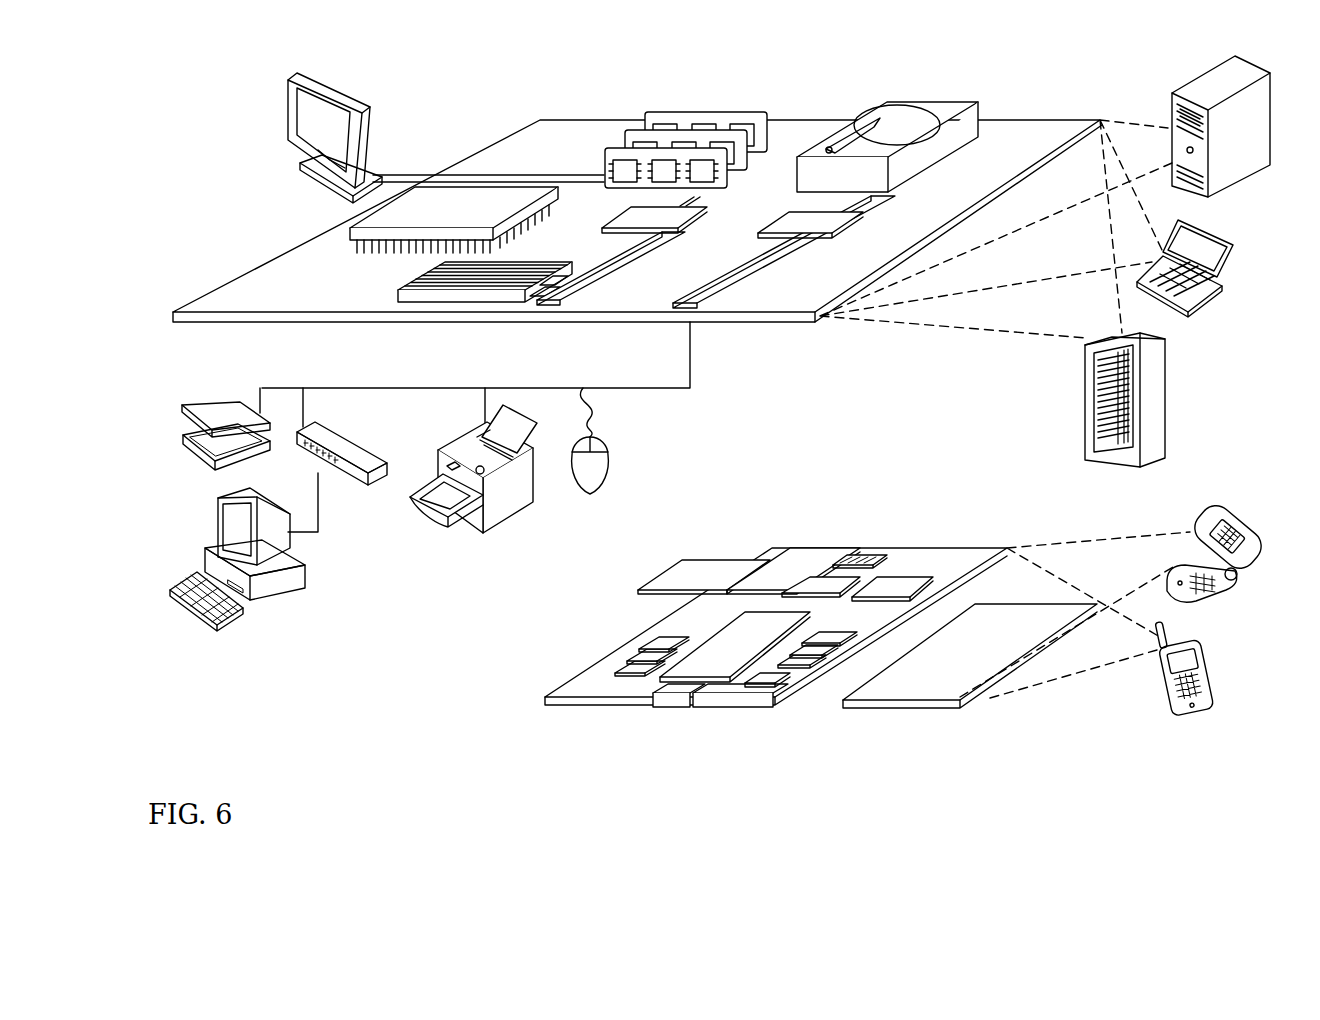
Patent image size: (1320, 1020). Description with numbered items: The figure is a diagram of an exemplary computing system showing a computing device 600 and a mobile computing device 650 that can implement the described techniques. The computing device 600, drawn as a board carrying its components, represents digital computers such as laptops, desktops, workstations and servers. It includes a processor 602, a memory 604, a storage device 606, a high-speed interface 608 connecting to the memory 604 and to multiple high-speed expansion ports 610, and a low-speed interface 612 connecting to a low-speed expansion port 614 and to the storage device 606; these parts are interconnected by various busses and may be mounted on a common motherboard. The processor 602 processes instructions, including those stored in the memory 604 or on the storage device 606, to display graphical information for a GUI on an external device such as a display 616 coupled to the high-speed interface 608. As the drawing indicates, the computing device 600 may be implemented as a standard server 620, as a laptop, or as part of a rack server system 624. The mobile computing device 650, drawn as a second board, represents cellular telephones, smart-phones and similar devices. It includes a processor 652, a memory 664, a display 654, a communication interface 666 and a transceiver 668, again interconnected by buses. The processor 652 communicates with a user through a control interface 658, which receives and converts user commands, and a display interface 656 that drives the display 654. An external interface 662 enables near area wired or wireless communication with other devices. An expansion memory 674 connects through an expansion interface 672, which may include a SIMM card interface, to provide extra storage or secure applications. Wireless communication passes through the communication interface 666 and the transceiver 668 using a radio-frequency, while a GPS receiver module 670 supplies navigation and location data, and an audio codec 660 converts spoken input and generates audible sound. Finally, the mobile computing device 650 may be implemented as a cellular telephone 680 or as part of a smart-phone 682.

The computing device 600 is at (467, 90).
The processor 602 is at (350, 233).
The memory 604 is at (660, 113).
The storage device 606 is at (872, 104).
The high-speed interface 608 is at (598, 214).
The high-speed expansion ports 610 is at (400, 292).
The low-speed interface 612 is at (790, 213).
The low-speed expansion port 614 is at (698, 316).
The display 616 is at (293, 80).
The standard server 620 is at (1170, 100).
The rack server system 624 is at (1085, 420).
The mobile computing device 650 is at (514, 716).
The processor 652 is at (708, 668).
The display 654 is at (928, 688).
The display interface 656 is at (787, 686).
The control interface 658 is at (817, 662).
The audio codec 660 is at (833, 634).
The external interface 662 is at (673, 698).
The memory 664 is at (627, 644).
The communication interface 666 is at (820, 580).
The transceiver 668 is at (893, 582).
The GPS receiver module 670 is at (877, 556).
The expansion interface 672 is at (763, 563).
The expansion memory 674 is at (678, 566).
The cellular telephone 680 is at (1212, 503).
The smart-phone 682 is at (1153, 674).